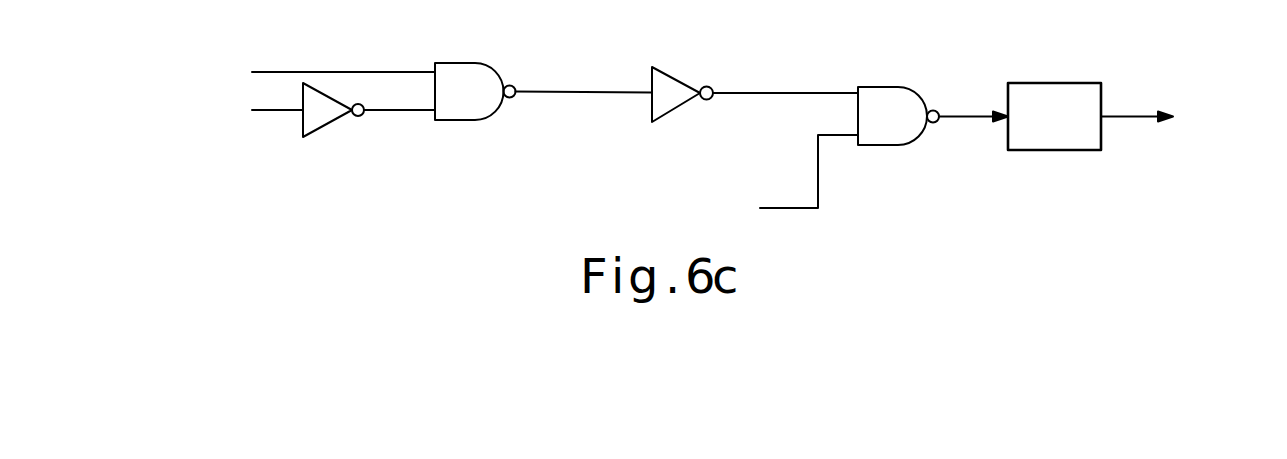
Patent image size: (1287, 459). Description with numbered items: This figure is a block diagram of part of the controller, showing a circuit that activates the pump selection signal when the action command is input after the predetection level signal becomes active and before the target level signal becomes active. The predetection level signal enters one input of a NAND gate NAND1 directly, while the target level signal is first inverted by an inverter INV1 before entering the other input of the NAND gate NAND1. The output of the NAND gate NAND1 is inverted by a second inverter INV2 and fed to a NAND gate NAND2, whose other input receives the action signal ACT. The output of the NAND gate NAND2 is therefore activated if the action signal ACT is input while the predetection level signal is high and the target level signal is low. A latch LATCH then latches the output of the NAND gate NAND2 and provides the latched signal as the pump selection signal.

The NAND gate NAND1 is at (475, 78).
The NAND gate NAND2 is at (898, 101).
The latch LATCH is at (1054, 116).
The first inverter INV1 is at (333, 110).
The second inverter INV2 is at (682, 94).
The action signal ACT is at (779, 176).